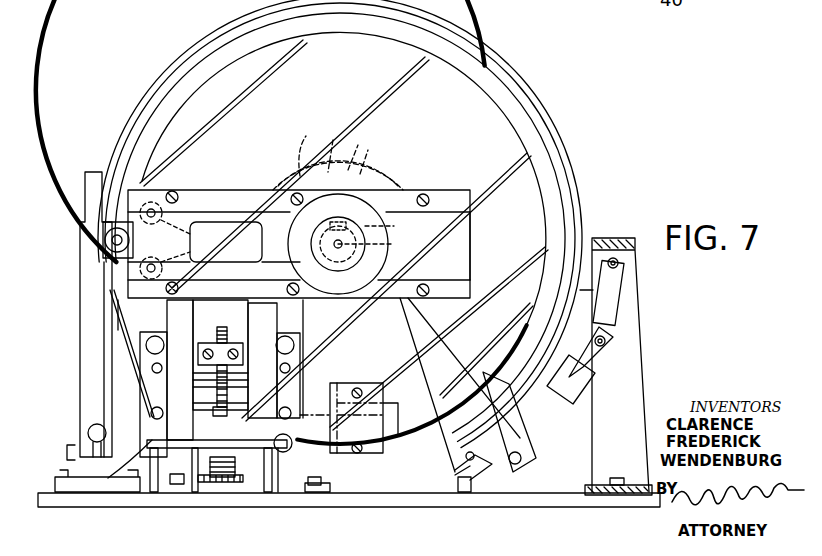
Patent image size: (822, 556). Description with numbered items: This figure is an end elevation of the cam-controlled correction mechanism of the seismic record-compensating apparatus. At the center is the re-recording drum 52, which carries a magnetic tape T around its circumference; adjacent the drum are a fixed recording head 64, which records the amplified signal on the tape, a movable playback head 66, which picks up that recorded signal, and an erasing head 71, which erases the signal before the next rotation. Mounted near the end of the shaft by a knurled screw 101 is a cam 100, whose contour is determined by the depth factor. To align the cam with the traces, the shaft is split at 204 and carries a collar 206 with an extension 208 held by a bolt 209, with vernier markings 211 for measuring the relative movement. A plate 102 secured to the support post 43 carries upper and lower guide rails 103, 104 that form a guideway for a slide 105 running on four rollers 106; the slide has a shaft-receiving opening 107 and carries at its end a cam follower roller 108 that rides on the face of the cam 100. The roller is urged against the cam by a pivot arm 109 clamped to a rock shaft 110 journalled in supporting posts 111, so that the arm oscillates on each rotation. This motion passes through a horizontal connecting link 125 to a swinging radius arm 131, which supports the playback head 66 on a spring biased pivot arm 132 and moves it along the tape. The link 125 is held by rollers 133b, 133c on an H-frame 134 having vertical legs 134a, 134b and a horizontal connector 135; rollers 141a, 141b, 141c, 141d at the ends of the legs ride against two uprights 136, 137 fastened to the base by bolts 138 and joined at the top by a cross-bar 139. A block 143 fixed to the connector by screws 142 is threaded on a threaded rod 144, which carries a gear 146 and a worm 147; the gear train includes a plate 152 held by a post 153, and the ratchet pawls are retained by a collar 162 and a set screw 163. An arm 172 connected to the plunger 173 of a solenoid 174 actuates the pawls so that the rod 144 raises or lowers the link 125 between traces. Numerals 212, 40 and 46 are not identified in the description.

The cam 100 is at (528, 130).
The drum 52 is at (552, 137).
The magnetic tape T is at (574, 167).
The knurled screw 101 is at (356, 192).
The plate 102 is at (453, 190).
The guide rail 103 is at (239, 190).
The guide rail 104 is at (234, 276).
The slide 105 is at (194, 190).
The rollers 106 is at (183, 244).
The shaft-receiving opening 107 is at (263, 206).
The cam follower roller 108 is at (105, 247).
The pivot arm 109 is at (82, 340).
The rock shaft 110 is at (88, 434).
The supporting posts 111 is at (113, 494).
The connecting link 125 is at (122, 388).
The swinging radius arm 131 is at (505, 434).
The spring biased pivot arm 132 is at (526, 462).
The roller 133b is at (128, 383).
The roller 133c is at (151, 413).
The H-frame 134 is at (135, 327).
The vertical leg 134a is at (297, 345).
The vertical leg 134b is at (147, 343).
The horizontal connector 135 is at (273, 323).
The upright 136 is at (176, 317).
The upright 137 is at (290, 337).
The bolts 138 is at (174, 485).
The cross-bar 139 is at (225, 304).
The roller 141a is at (293, 358).
The roller 141b is at (152, 366).
The roller 141c is at (113, 467).
The roller 141d is at (292, 449).
The screws 142 is at (318, 352).
The block 143 is at (232, 340).
The threaded rod 144 is at (280, 390).
The gear 146 is at (235, 463).
The worm 147 is at (277, 475).
The plate 152 is at (178, 452).
The post 153 is at (167, 488).
The collar 162 is at (217, 412).
The set screw 163 is at (223, 416).
The arm 172 is at (341, 418).
The plunger 173 is at (400, 436).
The solenoid 174 is at (380, 412).
The shaft split 204 is at (375, 244).
The collar 206 is at (380, 219).
The extension 208 is at (396, 158).
The bolt 209 is at (356, 154).
The vernier markings 211 is at (310, 147).
The link 212 is at (331, 138).
The base plate 40 is at (583, 508).
The support post 43 is at (442, 334).
The feet 46 is at (318, 488).
The recording head 64 is at (572, 386).
The playback head 66 is at (474, 468).
The erasing head 71 is at (612, 306).